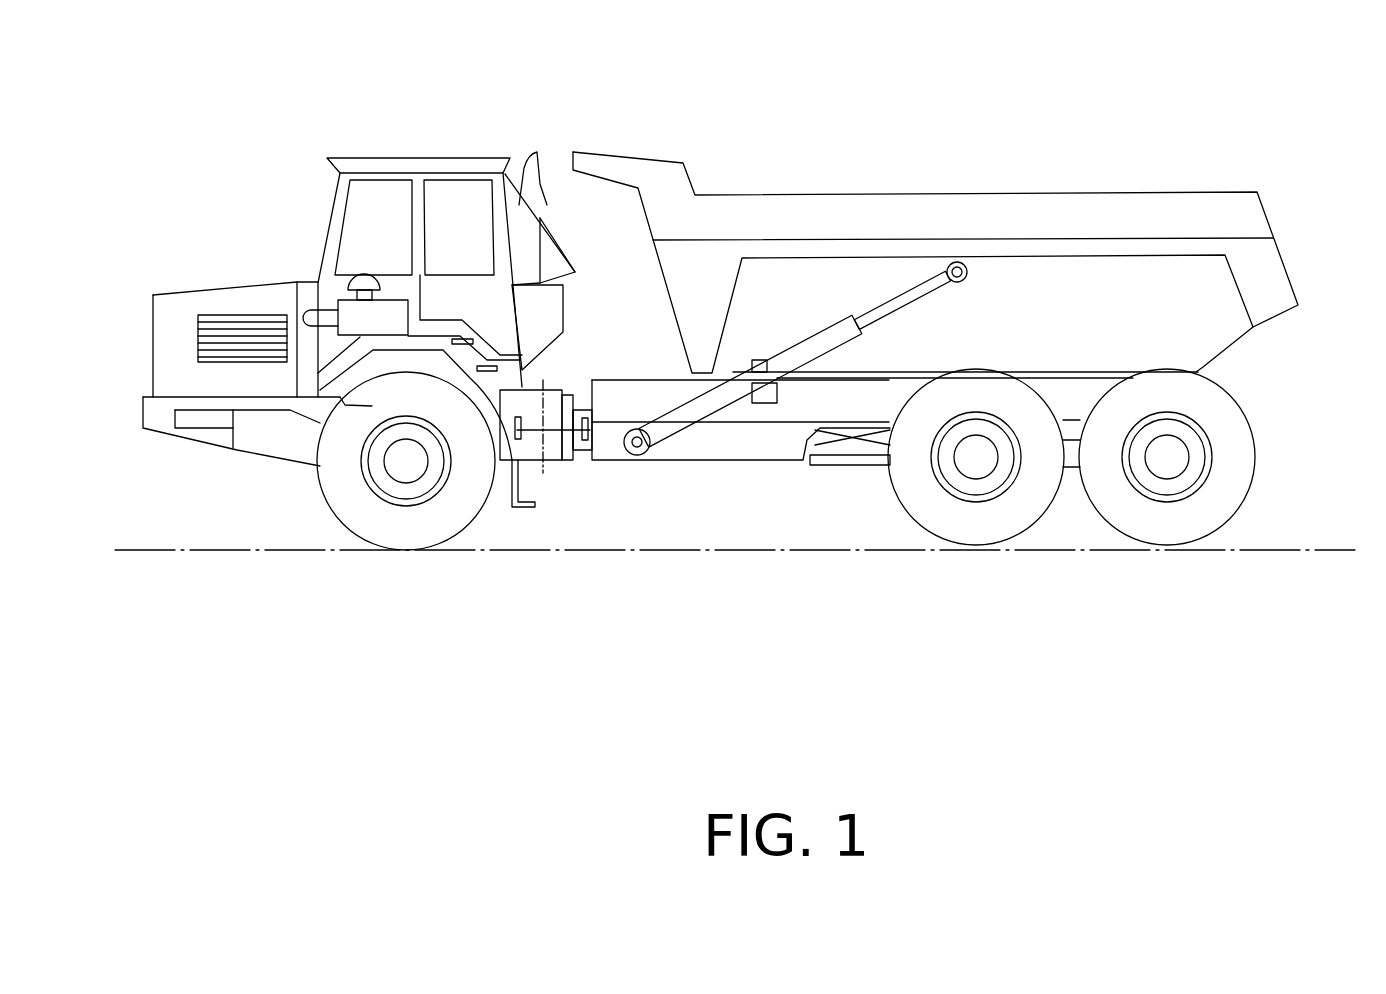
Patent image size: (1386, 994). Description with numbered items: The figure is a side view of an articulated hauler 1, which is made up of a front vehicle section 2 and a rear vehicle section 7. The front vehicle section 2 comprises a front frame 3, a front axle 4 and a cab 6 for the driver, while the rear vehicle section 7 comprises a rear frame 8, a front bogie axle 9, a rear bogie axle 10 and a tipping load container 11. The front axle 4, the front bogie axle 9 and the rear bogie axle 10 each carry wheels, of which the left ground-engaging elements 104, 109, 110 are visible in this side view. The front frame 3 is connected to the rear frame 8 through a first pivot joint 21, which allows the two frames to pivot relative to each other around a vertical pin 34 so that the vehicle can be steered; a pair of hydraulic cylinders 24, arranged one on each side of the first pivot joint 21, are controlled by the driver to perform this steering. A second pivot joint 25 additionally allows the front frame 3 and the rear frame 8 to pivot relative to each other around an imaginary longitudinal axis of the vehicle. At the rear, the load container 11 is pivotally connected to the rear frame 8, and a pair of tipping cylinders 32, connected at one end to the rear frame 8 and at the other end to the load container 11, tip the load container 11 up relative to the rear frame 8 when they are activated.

The articulated hauler 1 is at (840, 132).
The front vehicle section 2 is at (428, 123).
The front frame 3 is at (523, 457).
The front axle 4 is at (407, 461).
The cab 6 is at (475, 167).
The rear vehicle section 7 is at (1058, 162).
The rear frame 8 is at (713, 445).
The front bogie axle 9 is at (977, 457).
The rear bogie axle 10 is at (1167, 457).
The tipping load container 11 is at (1255, 268).
The first pivot joint 21 is at (577, 492).
The hydraulic cylinders 24 is at (575, 437).
The second pivot joint 25 is at (627, 477).
The tipping cylinders 32 is at (715, 400).
The vertical pin 34 is at (557, 437).
The left ground-engaging element 104 is at (338, 488).
The left ground-engaging element 109 is at (1036, 503).
The left ground-engaging element 110 is at (1223, 503).